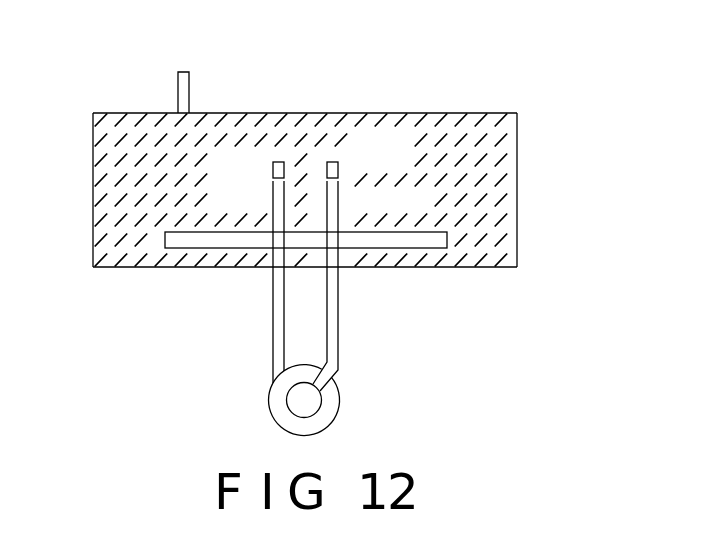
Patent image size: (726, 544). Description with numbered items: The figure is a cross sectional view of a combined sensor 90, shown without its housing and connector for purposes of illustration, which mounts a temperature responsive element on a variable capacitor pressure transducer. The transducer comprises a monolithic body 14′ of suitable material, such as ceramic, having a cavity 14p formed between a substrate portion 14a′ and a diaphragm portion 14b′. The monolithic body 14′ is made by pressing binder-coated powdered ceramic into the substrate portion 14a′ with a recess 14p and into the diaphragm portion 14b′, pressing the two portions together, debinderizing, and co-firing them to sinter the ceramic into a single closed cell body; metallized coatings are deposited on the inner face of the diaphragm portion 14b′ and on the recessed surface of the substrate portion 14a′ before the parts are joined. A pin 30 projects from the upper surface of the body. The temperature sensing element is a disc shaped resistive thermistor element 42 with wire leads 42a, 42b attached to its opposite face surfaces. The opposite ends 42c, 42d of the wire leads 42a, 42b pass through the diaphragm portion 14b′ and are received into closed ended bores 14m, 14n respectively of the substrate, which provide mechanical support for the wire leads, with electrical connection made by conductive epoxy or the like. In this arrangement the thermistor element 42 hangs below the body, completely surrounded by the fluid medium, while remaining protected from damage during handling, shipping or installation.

The combined sensor 90 is at (502, 80).
The monolithic body 14′ is at (508, 182).
The substrate portion 14a′ is at (422, 132).
The diaphragm portion 14b′ is at (133, 262).
The pin 30 is at (183, 85).
The cavity 14p is at (432, 240).
The closed ended bore 14n is at (273, 167).
The closed ended bore 14m is at (338, 167).
The end of wire lead 42d is at (272, 212).
The end of wire lead 42c is at (336, 198).
The wire lead 42b is at (277, 332).
The wire lead 42a is at (332, 312).
The thermistor element 42 is at (280, 393).